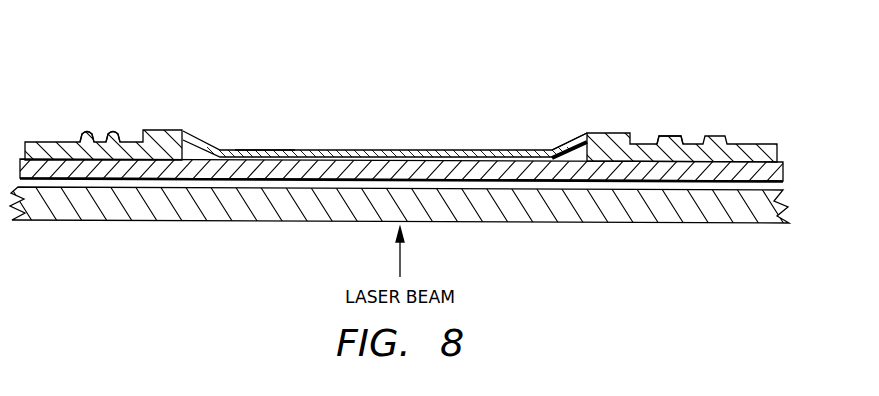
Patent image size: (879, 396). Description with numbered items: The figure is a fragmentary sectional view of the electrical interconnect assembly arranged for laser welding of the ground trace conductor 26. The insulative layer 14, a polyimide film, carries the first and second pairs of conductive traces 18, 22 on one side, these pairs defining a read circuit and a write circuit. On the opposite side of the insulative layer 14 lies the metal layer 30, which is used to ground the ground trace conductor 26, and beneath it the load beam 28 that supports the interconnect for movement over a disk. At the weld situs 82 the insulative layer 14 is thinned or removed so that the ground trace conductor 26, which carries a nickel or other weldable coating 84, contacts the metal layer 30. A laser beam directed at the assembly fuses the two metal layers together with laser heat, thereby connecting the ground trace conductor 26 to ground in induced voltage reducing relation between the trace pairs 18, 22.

The insulative layer 14 is at (133, 142).
The first pair of conductive traces 18 is at (115, 139).
The second pair of conductive traces 22 is at (661, 135).
The ground trace conductor 26 is at (387, 150).
The load beam 28 is at (720, 210).
The metal layer 30 is at (28, 163).
The weld situs 82 is at (262, 137).
The weldable coating 84 is at (505, 155).